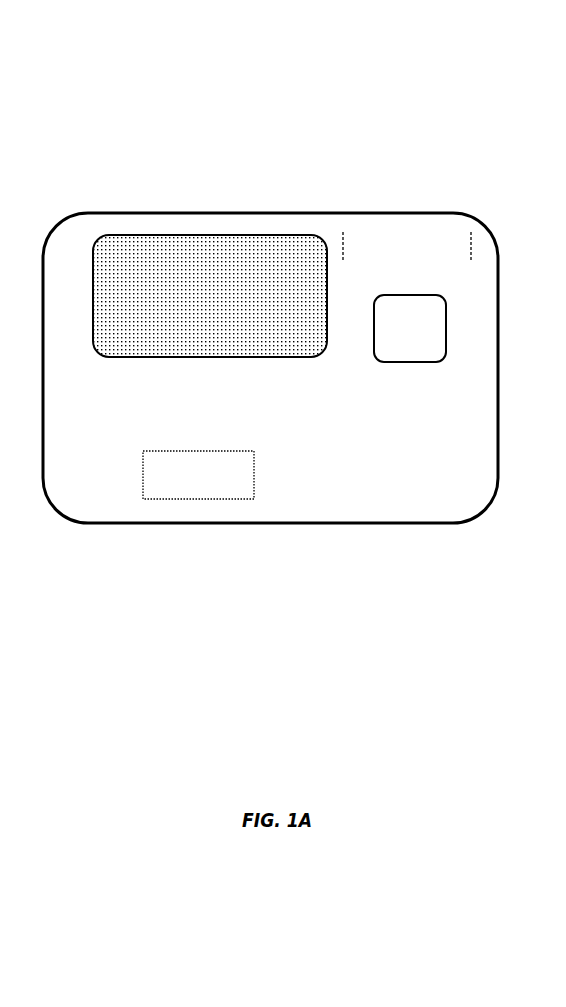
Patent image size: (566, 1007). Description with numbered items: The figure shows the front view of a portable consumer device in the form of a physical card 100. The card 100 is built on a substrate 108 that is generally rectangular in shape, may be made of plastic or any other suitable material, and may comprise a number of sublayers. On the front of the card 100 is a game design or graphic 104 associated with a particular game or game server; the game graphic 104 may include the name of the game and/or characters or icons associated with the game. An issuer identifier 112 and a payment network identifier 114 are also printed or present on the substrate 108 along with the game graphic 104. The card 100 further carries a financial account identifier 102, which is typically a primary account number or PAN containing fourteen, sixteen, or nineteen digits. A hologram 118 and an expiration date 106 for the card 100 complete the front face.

The physical card 100 is at (289, 160).
The financial account identifier 102 is at (128, 418).
The game design or graphic 104 is at (125, 236).
The expiration date 106 is at (397, 468).
The substrate 108 is at (351, 222).
The issuer identifier 112 is at (160, 500).
The payment network identifier 114 is at (445, 233).
The hologram 118 is at (417, 320).